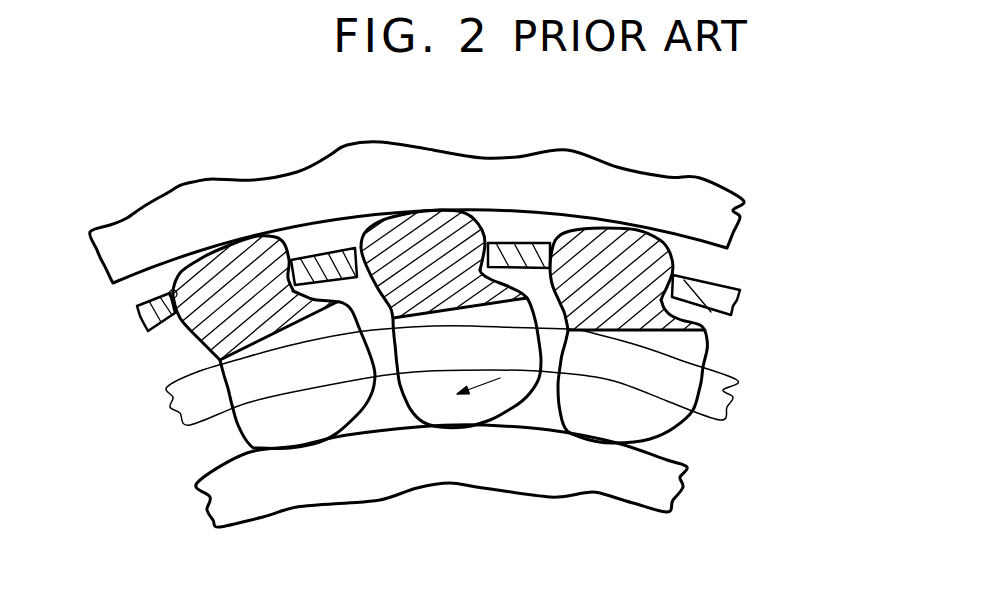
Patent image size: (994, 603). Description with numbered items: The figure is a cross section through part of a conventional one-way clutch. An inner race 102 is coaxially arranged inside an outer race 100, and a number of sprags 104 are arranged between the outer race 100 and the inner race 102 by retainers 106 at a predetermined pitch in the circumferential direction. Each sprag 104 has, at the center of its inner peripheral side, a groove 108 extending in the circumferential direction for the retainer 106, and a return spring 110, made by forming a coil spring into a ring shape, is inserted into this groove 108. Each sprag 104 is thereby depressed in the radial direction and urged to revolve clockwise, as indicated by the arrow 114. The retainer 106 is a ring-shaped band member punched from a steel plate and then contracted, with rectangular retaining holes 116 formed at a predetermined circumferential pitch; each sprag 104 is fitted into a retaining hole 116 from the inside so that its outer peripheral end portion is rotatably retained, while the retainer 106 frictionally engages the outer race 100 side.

The outer race 100 is at (721, 217).
The inner race 102 is at (664, 492).
The sprag 104 is at (240, 255).
The retainer 106 is at (711, 287).
The groove 108 is at (248, 343).
The return spring 110 is at (723, 392).
The arrow 114 is at (486, 380).
The retaining hole 116 is at (172, 292).